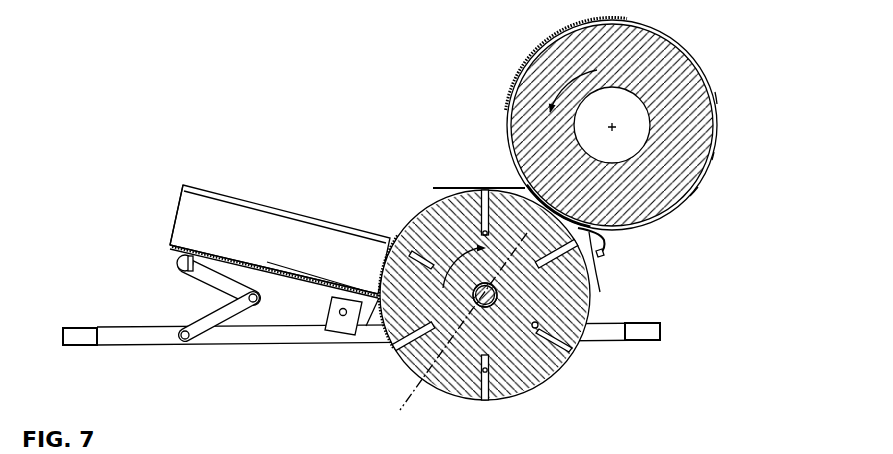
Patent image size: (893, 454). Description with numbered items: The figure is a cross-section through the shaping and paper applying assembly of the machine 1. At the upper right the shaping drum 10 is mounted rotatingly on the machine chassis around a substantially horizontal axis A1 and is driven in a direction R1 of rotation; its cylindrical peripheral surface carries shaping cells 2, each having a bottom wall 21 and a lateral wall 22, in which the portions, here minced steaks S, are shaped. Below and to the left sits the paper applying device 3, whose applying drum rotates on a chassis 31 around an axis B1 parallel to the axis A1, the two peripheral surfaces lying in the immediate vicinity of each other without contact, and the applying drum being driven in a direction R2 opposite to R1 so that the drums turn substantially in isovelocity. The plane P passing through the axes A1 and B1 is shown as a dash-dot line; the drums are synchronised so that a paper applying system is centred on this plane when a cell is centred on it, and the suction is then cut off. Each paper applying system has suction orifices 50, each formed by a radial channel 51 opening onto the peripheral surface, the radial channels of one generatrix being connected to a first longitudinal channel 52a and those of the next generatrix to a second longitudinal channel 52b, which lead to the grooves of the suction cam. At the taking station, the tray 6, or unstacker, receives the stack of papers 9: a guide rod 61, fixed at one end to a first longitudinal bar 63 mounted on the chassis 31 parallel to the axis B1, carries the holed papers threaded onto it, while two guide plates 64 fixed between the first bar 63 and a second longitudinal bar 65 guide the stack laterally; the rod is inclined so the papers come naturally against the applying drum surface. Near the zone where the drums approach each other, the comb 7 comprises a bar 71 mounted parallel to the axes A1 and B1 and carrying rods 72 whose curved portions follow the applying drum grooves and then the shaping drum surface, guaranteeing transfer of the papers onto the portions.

The drum 1 is at (637, 237).
The shaping cells 2 is at (717, 125).
The bottom wall 21 is at (712, 100).
The lateral wall 22 is at (713, 152).
The shaping drum 10 is at (698, 187).
The paper applying device 3 is at (260, 347).
The chassis 31 is at (130, 345).
The tray 6 is at (263, 237).
The guide rod 61 is at (315, 277).
The first longitudinal bar 63 is at (333, 327).
The guide plates 64 is at (177, 222).
The second longitudinal bar 65 is at (176, 265).
The comb 7 is at (624, 270).
The bar 71 is at (603, 256).
The rods 72 is at (606, 272).
The papers 9 is at (447, 187).
The suction orifices 50 is at (496, 322).
The radial channel 51 is at (500, 392).
The first longitudinal channel 52a is at (480, 370).
The second longitudinal channel 52b is at (568, 350).
The minced steaks S is at (560, 36).
The plane P is at (592, 150).
The axis of rotation A1 is at (612, 127).
The axis of rotation B1 is at (480, 303).
The direction of rotation R1 is at (563, 88).
The direction of rotation R2 is at (440, 217).